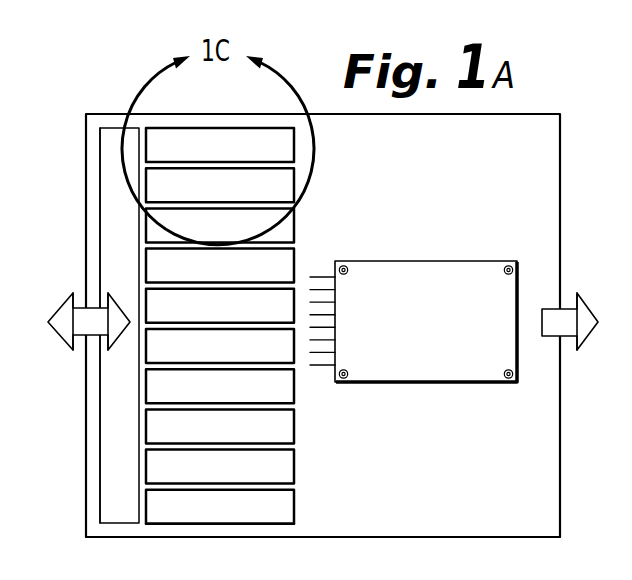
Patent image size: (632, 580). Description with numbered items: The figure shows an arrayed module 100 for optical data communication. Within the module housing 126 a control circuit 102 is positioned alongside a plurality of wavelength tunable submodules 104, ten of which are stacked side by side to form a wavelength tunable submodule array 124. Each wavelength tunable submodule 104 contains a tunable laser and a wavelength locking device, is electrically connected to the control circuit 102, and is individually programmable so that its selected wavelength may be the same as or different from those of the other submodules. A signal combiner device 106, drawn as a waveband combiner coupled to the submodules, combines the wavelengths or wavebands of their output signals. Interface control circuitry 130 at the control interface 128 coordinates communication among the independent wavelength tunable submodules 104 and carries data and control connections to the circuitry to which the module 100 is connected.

The module 100 is at (566, 433).
The control circuit 102 is at (118, 488).
The wavelength tunable submodule 104 is at (294, 143).
The signal combiner device 106 is at (438, 261).
The wavelength tunable submodule array 124 is at (196, 532).
The module housing 126 is at (377, 538).
The control interface 128 is at (65, 329).
The interface control circuitry 130 is at (115, 222).